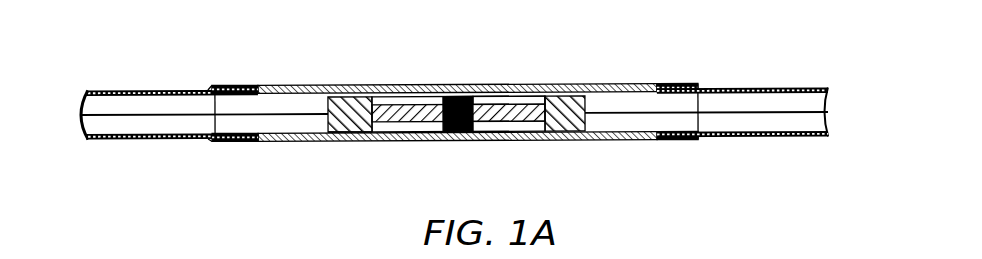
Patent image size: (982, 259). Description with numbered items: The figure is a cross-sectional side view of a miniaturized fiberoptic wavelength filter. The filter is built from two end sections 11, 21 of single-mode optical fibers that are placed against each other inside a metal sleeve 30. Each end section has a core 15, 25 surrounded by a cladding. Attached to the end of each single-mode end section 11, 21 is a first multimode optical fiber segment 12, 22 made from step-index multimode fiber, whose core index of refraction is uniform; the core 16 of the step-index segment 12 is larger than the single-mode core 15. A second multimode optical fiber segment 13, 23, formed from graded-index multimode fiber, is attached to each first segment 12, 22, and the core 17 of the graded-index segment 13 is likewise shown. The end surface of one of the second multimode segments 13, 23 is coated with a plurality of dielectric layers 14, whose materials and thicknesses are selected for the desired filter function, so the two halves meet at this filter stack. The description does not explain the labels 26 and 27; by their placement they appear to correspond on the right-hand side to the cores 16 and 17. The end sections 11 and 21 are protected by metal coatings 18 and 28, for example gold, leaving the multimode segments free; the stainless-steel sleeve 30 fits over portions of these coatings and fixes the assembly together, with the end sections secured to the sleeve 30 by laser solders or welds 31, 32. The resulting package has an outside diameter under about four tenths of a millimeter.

The end section of single-mode optical fiber 11 is at (162, 102).
The first multimode optical fiber segment 12 is at (326, 91).
The second multimode optical fiber segment 13 is at (446, 80).
The dielectric layers 14 is at (436, 66).
The core 15 is at (204, 78).
The core 16 is at (332, 158).
The core 17 is at (448, 151).
The metal coating 18 is at (159, 156).
The end section of single-mode optical fiber 21 is at (756, 97).
The first multimode optical fiber segment 22 is at (434, 93).
The second multimode optical fiber segment 23 is at (514, 80).
The core 25 is at (706, 154).
The second plug 26 is at (542, 149).
The inner tube lower wall 27 is at (488, 152).
The metal coating 28 is at (755, 155).
The sleeve 30 is at (447, 73).
The laser solder or weld 31 is at (187, 86).
The laser solder or weld 32 is at (715, 96).